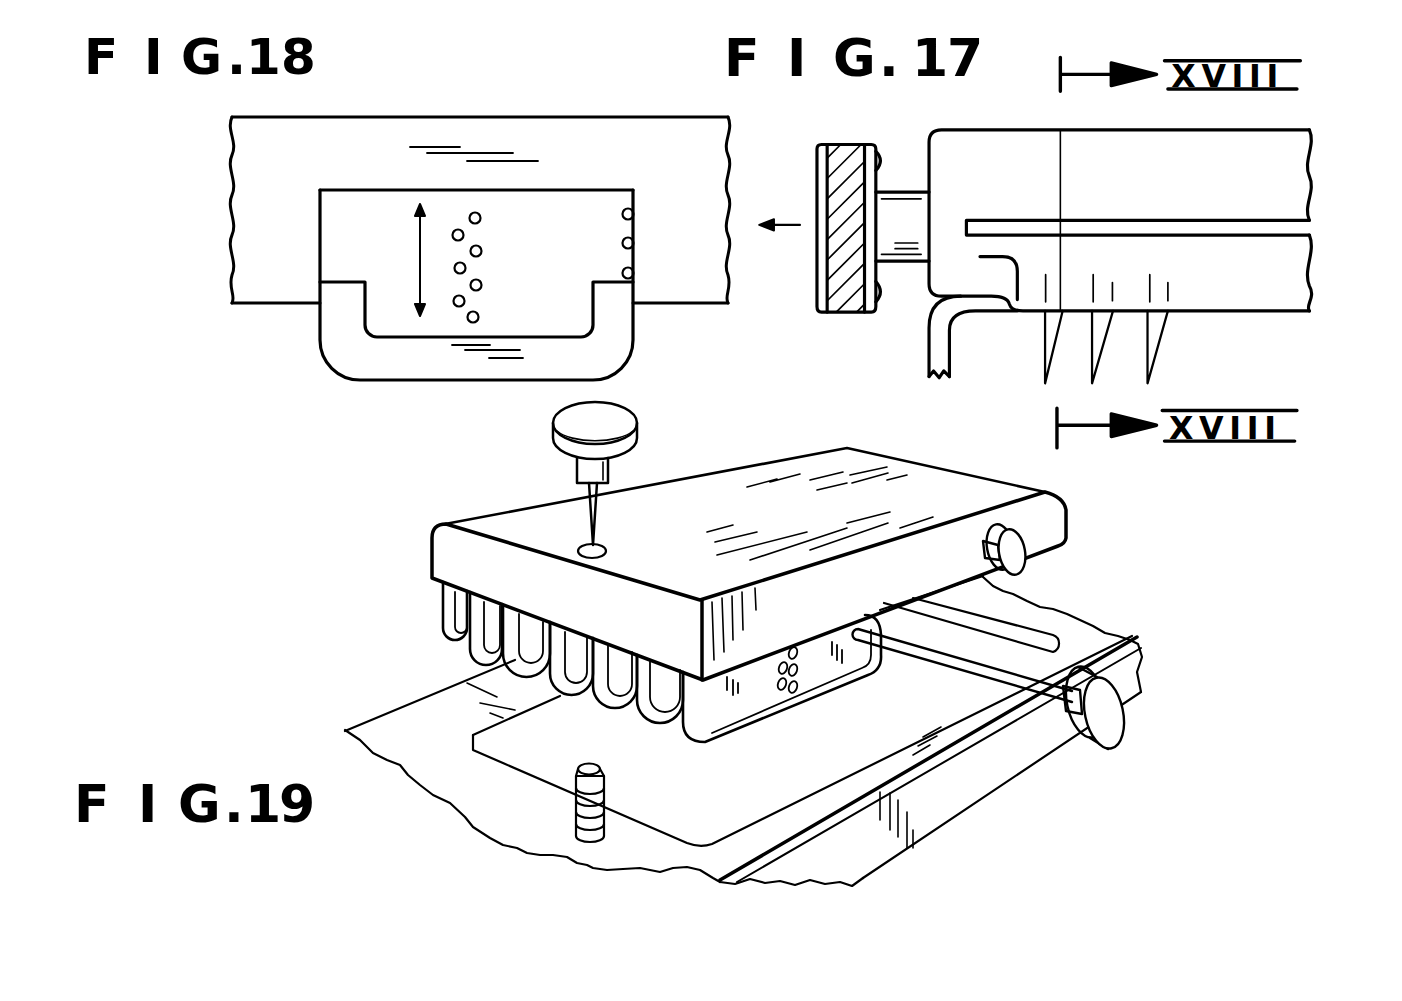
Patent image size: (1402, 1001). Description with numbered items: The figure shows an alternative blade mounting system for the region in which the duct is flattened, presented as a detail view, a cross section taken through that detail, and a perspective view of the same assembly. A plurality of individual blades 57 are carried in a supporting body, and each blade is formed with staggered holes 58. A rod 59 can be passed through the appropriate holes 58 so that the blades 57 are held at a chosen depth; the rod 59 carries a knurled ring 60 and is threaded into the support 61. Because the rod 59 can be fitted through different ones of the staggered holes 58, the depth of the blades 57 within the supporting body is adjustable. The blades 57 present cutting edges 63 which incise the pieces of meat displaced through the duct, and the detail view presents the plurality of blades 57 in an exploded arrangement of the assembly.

In FIG. 18, the blades 57 is at (332, 343).
In FIG. 19, the blades 57 is at (487, 645).
In FIG. 18, the staggered holes 58 is at (465, 323).
In FIG. 17, the rod 59 is at (1265, 221).
In FIG. 19, the knurled ring 60 is at (1107, 719).
In FIG. 17, the support 61 is at (907, 140).
In FIG. 17, the cutting edges 63 is at (1050, 327).